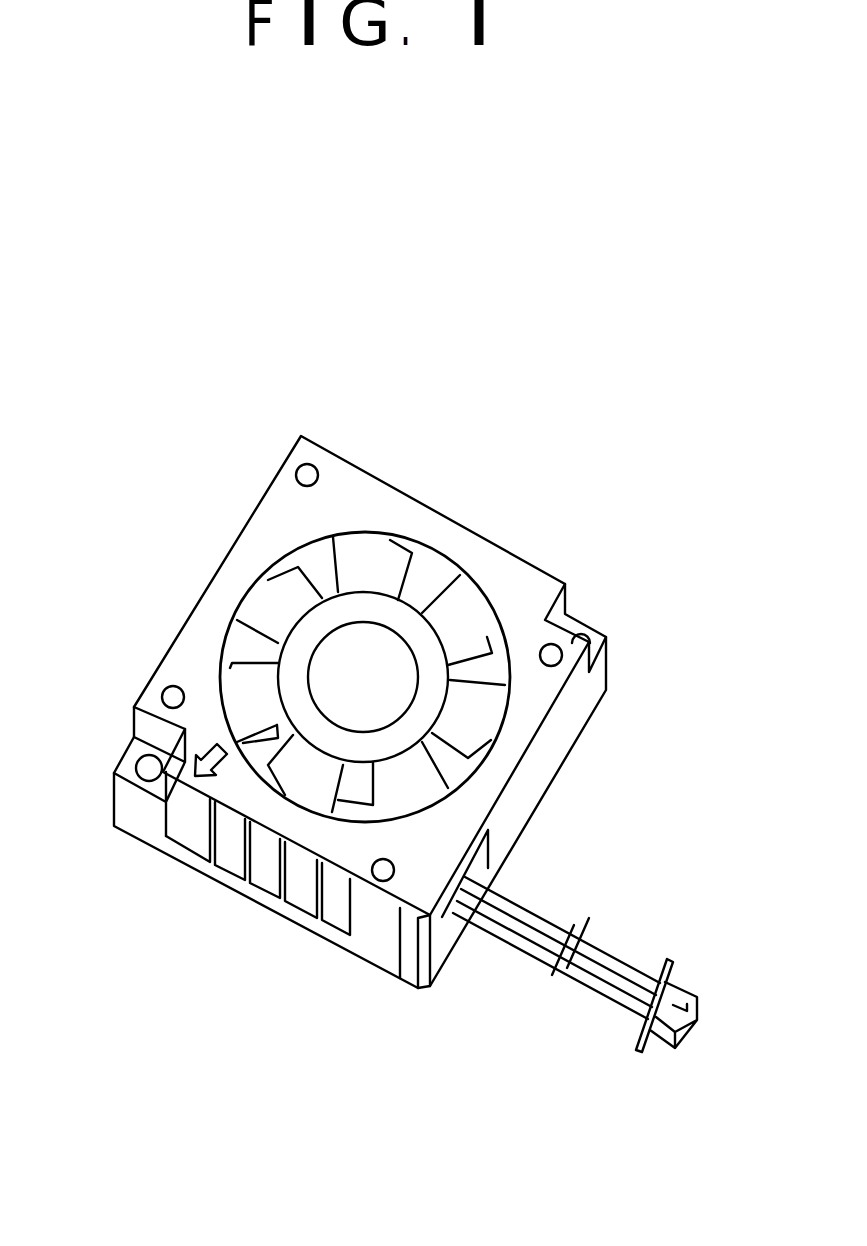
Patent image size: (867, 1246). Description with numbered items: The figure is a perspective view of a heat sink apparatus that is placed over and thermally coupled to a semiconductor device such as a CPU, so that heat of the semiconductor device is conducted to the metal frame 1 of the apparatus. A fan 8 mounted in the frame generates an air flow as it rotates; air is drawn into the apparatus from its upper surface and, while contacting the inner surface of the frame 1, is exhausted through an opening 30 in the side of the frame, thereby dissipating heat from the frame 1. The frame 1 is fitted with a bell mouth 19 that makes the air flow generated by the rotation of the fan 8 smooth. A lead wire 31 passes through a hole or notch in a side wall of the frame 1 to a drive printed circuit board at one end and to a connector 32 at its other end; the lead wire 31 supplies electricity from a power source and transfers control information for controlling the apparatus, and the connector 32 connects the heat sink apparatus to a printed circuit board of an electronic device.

The metal frame 1 is at (375, 943).
The fan 8 is at (383, 560).
The bell mouth 19 is at (355, 676).
The opening 30 is at (228, 901).
The lead wire 31 is at (579, 920).
The connector 32 is at (711, 968).